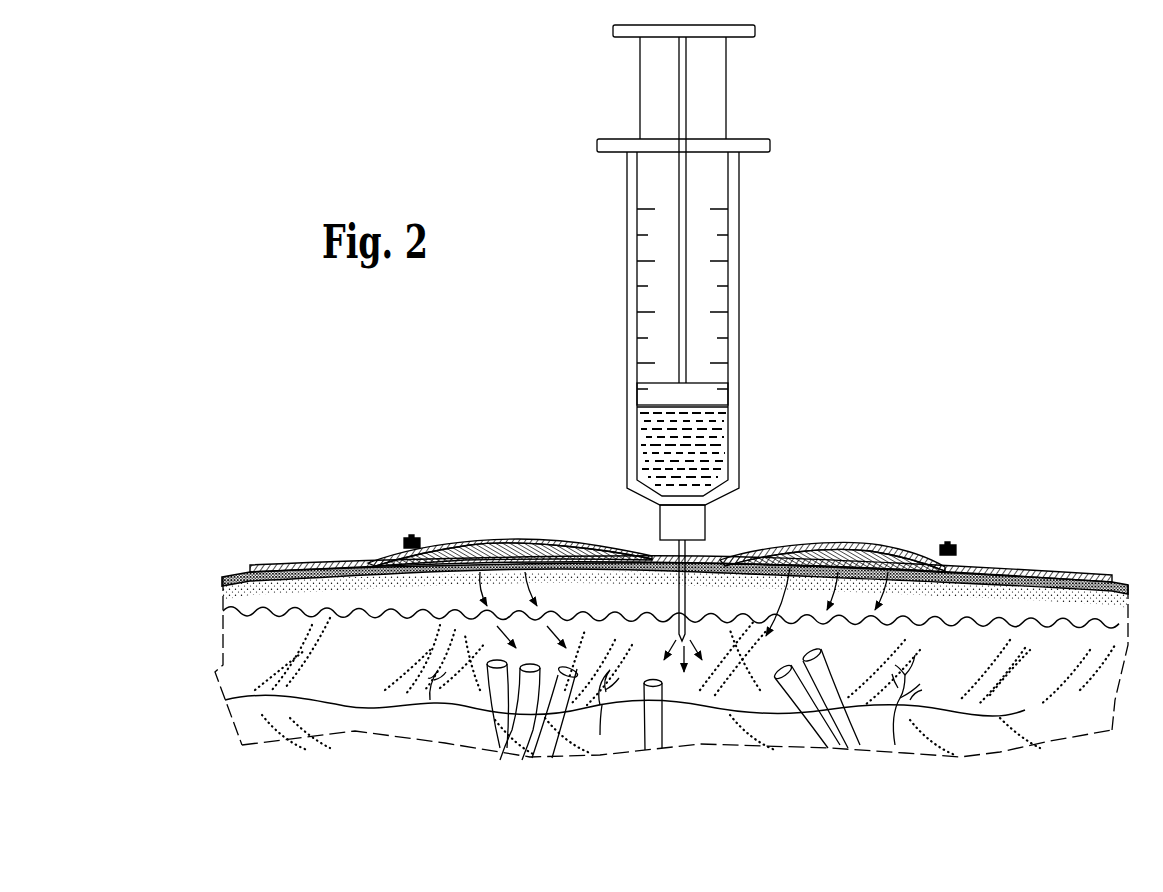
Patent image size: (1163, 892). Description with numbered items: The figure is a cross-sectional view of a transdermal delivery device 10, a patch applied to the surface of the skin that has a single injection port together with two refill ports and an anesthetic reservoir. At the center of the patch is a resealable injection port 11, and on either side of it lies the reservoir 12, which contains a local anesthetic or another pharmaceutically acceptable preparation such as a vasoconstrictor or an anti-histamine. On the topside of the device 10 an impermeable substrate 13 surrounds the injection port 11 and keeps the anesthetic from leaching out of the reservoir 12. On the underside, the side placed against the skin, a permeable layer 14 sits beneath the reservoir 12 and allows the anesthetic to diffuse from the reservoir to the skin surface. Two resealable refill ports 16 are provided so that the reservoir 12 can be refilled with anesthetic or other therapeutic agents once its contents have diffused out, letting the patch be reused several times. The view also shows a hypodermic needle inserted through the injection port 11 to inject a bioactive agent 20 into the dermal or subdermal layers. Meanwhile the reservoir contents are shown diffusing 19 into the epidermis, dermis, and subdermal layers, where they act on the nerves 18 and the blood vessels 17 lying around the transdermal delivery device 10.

The transdermal delivery device 10 is at (1063, 526).
The resealable injection port 11 is at (712, 555).
The reservoir 12 is at (490, 540).
The impermeable substrate 13 is at (297, 562).
The permeable layer 14 is at (913, 568).
The resealable refill ports 16 is at (406, 539).
The blood vessels 17 is at (838, 752).
The nerves 18 is at (897, 739).
The diffusing 19 is at (902, 672).
The bioactive agent 20 is at (672, 647).